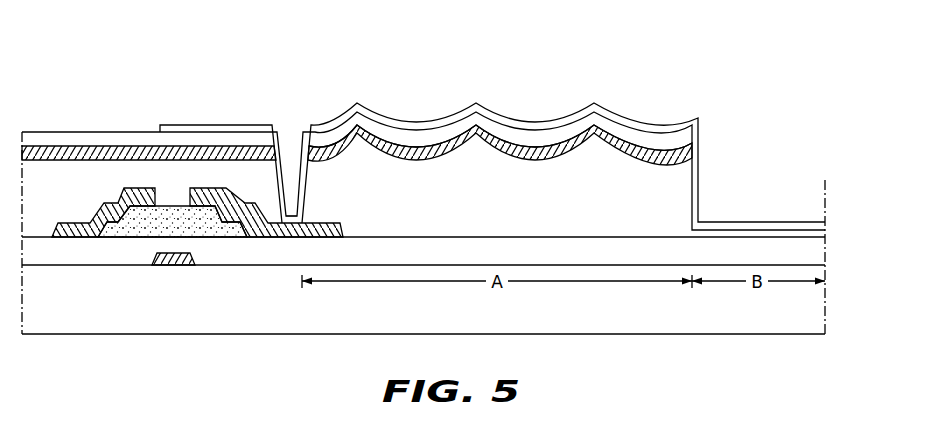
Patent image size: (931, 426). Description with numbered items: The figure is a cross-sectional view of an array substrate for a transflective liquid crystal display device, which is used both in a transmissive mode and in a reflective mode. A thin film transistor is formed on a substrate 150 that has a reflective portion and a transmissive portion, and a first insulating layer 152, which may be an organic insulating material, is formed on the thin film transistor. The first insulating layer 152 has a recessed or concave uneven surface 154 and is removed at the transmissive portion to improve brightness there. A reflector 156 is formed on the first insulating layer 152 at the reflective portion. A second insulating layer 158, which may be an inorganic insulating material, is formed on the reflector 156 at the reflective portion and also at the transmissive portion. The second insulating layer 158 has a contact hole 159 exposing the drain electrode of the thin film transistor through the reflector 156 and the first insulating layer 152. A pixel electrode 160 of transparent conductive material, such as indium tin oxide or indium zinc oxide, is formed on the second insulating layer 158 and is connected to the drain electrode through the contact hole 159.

The substrate 150 is at (814, 296).
The first insulating layer 152 is at (422, 185).
The uneven surface 154 is at (533, 149).
The reflector 156 is at (623, 145).
The second insulating layer 158 is at (668, 137).
The contact hole 159 is at (292, 123).
The pixel electrode 160 is at (350, 97).